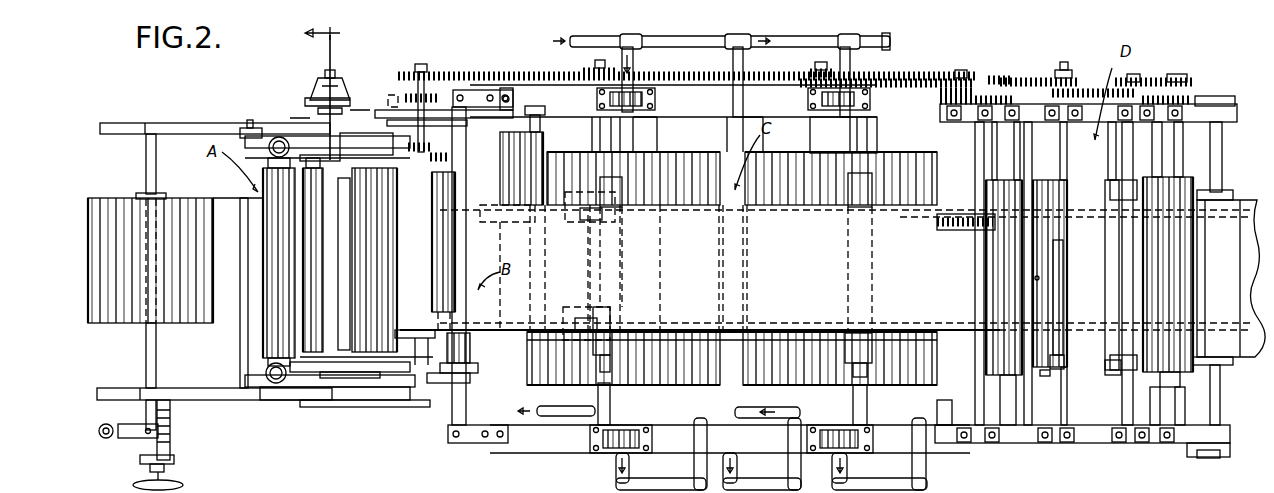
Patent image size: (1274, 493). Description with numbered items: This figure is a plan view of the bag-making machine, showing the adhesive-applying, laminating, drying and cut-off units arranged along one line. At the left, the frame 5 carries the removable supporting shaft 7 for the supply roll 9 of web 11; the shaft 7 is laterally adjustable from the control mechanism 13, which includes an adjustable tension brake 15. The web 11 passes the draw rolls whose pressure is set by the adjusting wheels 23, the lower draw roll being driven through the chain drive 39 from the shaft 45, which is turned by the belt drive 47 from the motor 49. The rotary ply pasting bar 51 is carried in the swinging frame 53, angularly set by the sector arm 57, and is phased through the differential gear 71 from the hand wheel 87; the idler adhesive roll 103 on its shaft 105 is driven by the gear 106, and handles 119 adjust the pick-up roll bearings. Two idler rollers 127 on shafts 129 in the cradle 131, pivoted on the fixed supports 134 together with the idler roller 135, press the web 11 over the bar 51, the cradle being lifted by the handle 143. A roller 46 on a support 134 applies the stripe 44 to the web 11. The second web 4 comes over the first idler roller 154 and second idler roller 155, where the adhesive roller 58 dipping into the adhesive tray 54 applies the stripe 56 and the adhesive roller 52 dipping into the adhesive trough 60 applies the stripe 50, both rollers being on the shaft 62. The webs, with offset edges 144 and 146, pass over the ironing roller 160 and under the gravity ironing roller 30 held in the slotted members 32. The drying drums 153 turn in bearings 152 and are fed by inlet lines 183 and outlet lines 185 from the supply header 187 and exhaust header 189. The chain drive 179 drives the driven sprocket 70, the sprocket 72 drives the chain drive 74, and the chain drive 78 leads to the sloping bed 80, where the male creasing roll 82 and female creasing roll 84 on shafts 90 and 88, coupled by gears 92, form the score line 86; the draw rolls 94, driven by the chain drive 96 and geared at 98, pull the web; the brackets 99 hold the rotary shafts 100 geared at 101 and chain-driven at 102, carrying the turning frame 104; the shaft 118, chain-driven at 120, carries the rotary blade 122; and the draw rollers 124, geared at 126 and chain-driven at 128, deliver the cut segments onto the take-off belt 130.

The web 4 is at (715, 328).
The frame 5 is at (215, 122).
The supporting shaft 7 is at (147, 160).
The supply roll 9 is at (168, 310).
The web 11 is at (233, 318).
The control mechanism 13 is at (180, 478).
The adjustable tension brake 15 is at (122, 438).
The adjusting wheels 23 is at (272, 133).
The gravity ironing roller 30 is at (440, 232).
The slotted members 32 is at (450, 155).
The chain drive 39 is at (250, 128).
The stripe 44 is at (508, 318).
The shaft 45 is at (422, 64).
The roller 46 is at (418, 305).
The belt drive 47 is at (476, 120).
The motor 49 is at (530, 135).
The stripe 50 is at (672, 215).
The ply pasting bar 51 is at (335, 255).
The adhesive roller 52 is at (580, 222).
The swinging frame 53 is at (345, 150).
The adhesive tray 54 is at (605, 307).
The stripe 56 is at (652, 318).
The sector arm 57 is at (315, 390).
The adhesive roller 58 is at (577, 320).
The adhesive trough 60 is at (605, 228).
The shaft 62 is at (585, 270).
The driven sprocket 70 is at (595, 85).
The differential gear 71 is at (313, 76).
The sprocket 72 is at (583, 74).
The chain drive 74 is at (760, 77).
The chain drive 78 is at (895, 78).
The sloping bed 80 is at (1090, 125).
The male creasing roll 82 is at (960, 232).
The female creasing roll 84 is at (935, 222).
The score line 86 is at (1070, 240).
The hand wheel 87 is at (392, 95).
The shaft 88 is at (950, 395).
The shaft 90 is at (975, 157).
The gears 92 is at (942, 104).
The draw rolls 94 is at (1010, 355).
The chain drive 96 is at (980, 86).
The gearing 98 is at (1008, 122).
The brackets 99 is at (1055, 125).
The rotary shafts 100 is at (1055, 395).
The gearing 101 is at (1050, 72).
The chain drive 102 is at (1032, 78).
The idler adhesive roll 103 is at (355, 330).
The turning frame 104 is at (1045, 250).
The shaft 105 is at (355, 398).
The gear 106 is at (1035, 278).
The shaft 118 is at (1125, 385).
The handles 119 is at (392, 413).
The chain drive 120 is at (1097, 88).
The rotary blade 122 is at (1108, 307).
The draw rollers 124 is at (1165, 195).
The gearing 126 is at (1162, 78).
The idler rollers 127 is at (270, 250).
The chain drive 128 is at (1150, 78).
The shafts 129 is at (300, 392).
The take-off belt 130 is at (1240, 200).
The cradle 131 is at (300, 148).
The fixed supports 134 is at (400, 338).
The idler roller 135 is at (390, 215).
The handle 143 is at (415, 365).
The edge 144 is at (810, 330).
The edge 146 is at (798, 337).
The bearings 152 is at (652, 98).
The drying drums 153 is at (645, 372).
The first idler roller 154 is at (848, 200).
The second idler roller 155 is at (625, 255).
The ironing roller 160 is at (463, 345).
The chain drive 179 is at (500, 72).
The inlet lines 183 is at (733, 52).
The outlet lines 185 is at (915, 476).
The supply header 187 is at (612, 42).
The exhaust header 189 is at (557, 412).